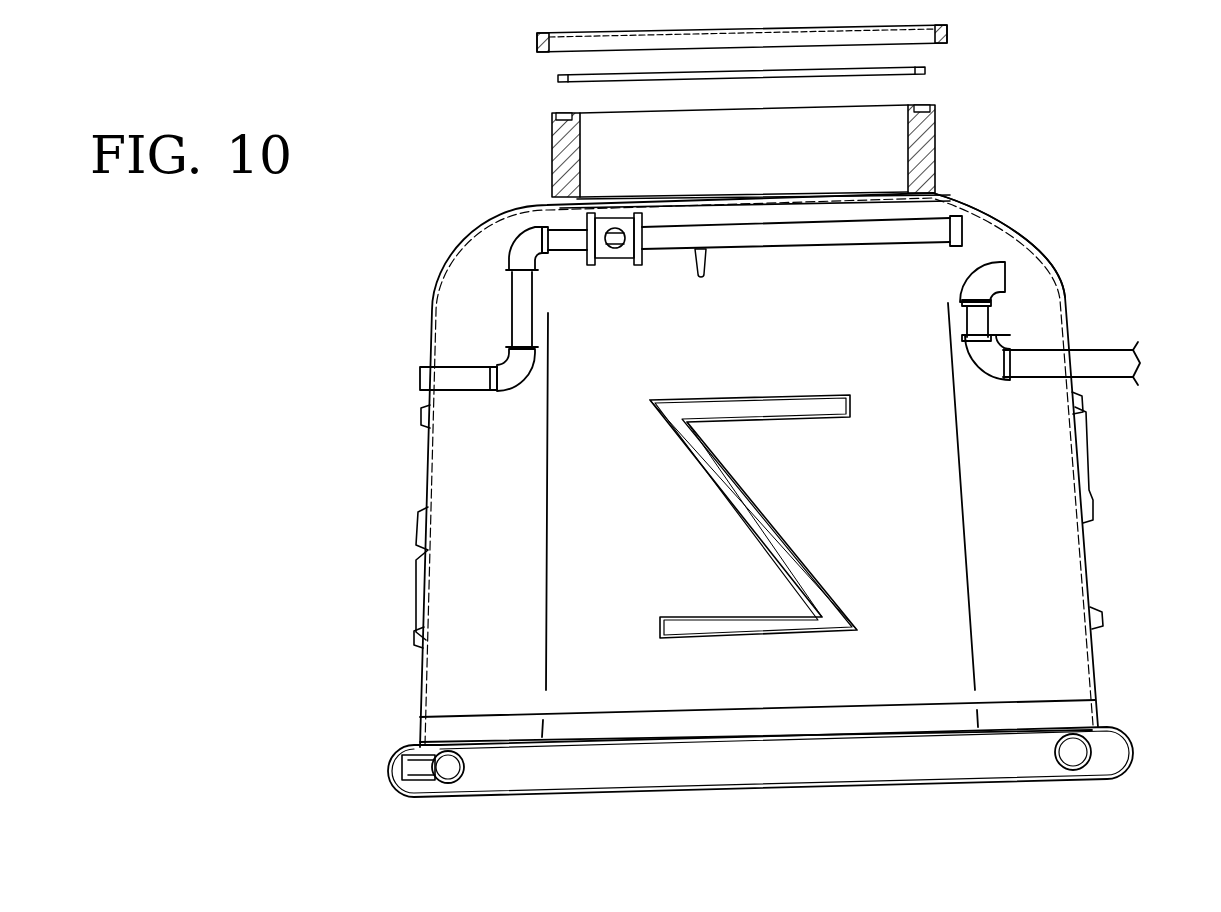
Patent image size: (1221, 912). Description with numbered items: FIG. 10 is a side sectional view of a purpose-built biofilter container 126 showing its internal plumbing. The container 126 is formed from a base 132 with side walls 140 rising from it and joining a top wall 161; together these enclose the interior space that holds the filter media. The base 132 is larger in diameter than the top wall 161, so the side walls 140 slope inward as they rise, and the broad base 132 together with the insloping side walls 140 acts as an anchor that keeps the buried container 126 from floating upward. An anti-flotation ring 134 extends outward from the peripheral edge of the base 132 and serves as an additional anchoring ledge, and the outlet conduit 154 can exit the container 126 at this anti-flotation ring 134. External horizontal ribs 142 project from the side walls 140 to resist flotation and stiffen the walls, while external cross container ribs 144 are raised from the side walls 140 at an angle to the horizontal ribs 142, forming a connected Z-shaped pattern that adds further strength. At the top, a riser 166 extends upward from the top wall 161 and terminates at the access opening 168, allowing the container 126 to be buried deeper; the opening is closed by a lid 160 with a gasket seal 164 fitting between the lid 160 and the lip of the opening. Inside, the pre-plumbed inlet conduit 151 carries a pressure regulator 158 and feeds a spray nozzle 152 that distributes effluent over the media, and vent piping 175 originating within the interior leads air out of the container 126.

The biofilter container 126 is at (1100, 222).
The base 132 is at (1080, 780).
The anti-flotation ring 134 is at (1137, 750).
The side wall 140 is at (1100, 673).
The external horizontal rib 142 is at (757, 405).
The external cross container rib 144 is at (418, 545).
The inlet conduit 151 is at (498, 315).
The spray nozzle 152 is at (707, 265).
The outlet conduit 154 is at (560, 753).
The pressure regulator 158 is at (603, 266).
The lid 160 is at (950, 33).
The top wall 161 is at (1000, 214).
The gasket seal 164 is at (930, 70).
The riser 166 is at (552, 163).
The access opening 168 is at (600, 126).
The piping 175 is at (1090, 352).